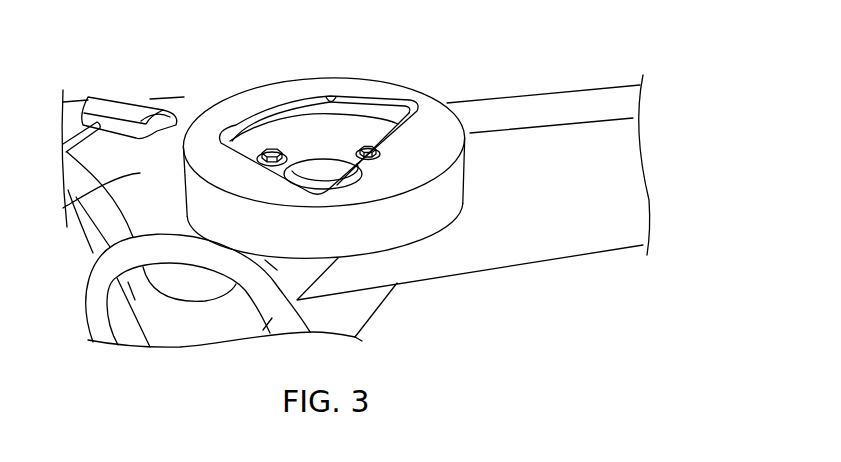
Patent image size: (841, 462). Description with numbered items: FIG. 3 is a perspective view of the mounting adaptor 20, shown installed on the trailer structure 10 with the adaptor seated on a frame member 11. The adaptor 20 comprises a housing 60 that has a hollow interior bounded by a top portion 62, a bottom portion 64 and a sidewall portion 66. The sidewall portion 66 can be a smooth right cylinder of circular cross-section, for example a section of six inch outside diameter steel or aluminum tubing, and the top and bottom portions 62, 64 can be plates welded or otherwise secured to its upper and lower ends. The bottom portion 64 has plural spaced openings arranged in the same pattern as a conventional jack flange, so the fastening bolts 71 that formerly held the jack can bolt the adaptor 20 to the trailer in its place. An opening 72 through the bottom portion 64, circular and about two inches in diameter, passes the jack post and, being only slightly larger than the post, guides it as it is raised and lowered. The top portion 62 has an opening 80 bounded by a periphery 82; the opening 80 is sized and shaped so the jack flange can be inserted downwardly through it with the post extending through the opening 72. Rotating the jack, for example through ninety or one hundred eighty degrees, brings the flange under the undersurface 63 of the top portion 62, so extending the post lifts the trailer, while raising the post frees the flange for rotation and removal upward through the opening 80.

The vehicle frame assembly 10 is at (78, 249).
The frame member 11 is at (63, 208).
The mounting adaptor 20 is at (339, 168).
The housing 60 is at (339, 169).
The top portion 62 is at (321, 90).
The undersurface 63 is at (346, 133).
The bottom portion 64 is at (354, 130).
The sidewall portion 66 is at (446, 217).
The fastening bolts 71 is at (268, 147).
The opening 72 is at (325, 178).
The opening 80 is at (295, 110).
The periphery 82 is at (262, 110).